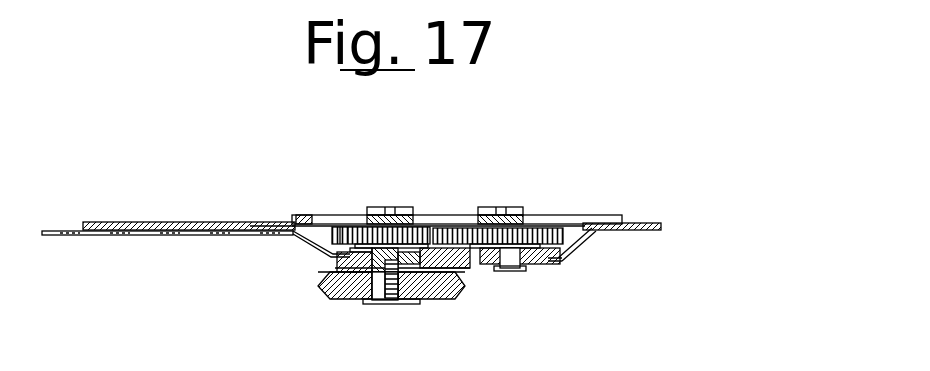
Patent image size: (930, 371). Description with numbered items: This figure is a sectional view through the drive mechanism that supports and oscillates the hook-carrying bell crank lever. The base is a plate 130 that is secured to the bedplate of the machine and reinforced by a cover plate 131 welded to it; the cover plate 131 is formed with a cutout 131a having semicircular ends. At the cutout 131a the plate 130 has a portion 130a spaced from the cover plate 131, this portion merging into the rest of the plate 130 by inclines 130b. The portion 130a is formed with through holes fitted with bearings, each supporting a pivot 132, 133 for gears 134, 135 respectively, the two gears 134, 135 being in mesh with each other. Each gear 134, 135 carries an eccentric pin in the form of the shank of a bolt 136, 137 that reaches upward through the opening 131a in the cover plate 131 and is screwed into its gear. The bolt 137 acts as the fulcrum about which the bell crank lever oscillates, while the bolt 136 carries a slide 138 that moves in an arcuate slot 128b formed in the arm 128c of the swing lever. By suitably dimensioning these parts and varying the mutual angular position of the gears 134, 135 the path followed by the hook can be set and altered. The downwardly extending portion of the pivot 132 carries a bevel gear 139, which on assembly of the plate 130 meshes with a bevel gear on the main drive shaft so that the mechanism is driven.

The arcuate slot 128b is at (331, 215).
The arm of the swing lever 128c is at (303, 214).
The plate 130 is at (92, 236).
The portion of the plate 130a is at (558, 260).
The inclines 130b is at (581, 242).
The cover plate 131 is at (140, 226).
The cutout 131a is at (259, 228).
The pivot 132 is at (381, 300).
The pivot 133 is at (513, 264).
The gear 134 is at (422, 226).
The gear 135 is at (544, 218).
The bolt 136 is at (399, 207).
The bolt 137 is at (492, 207).
The slide 138 is at (364, 224).
The bevel gear 139 is at (440, 286).